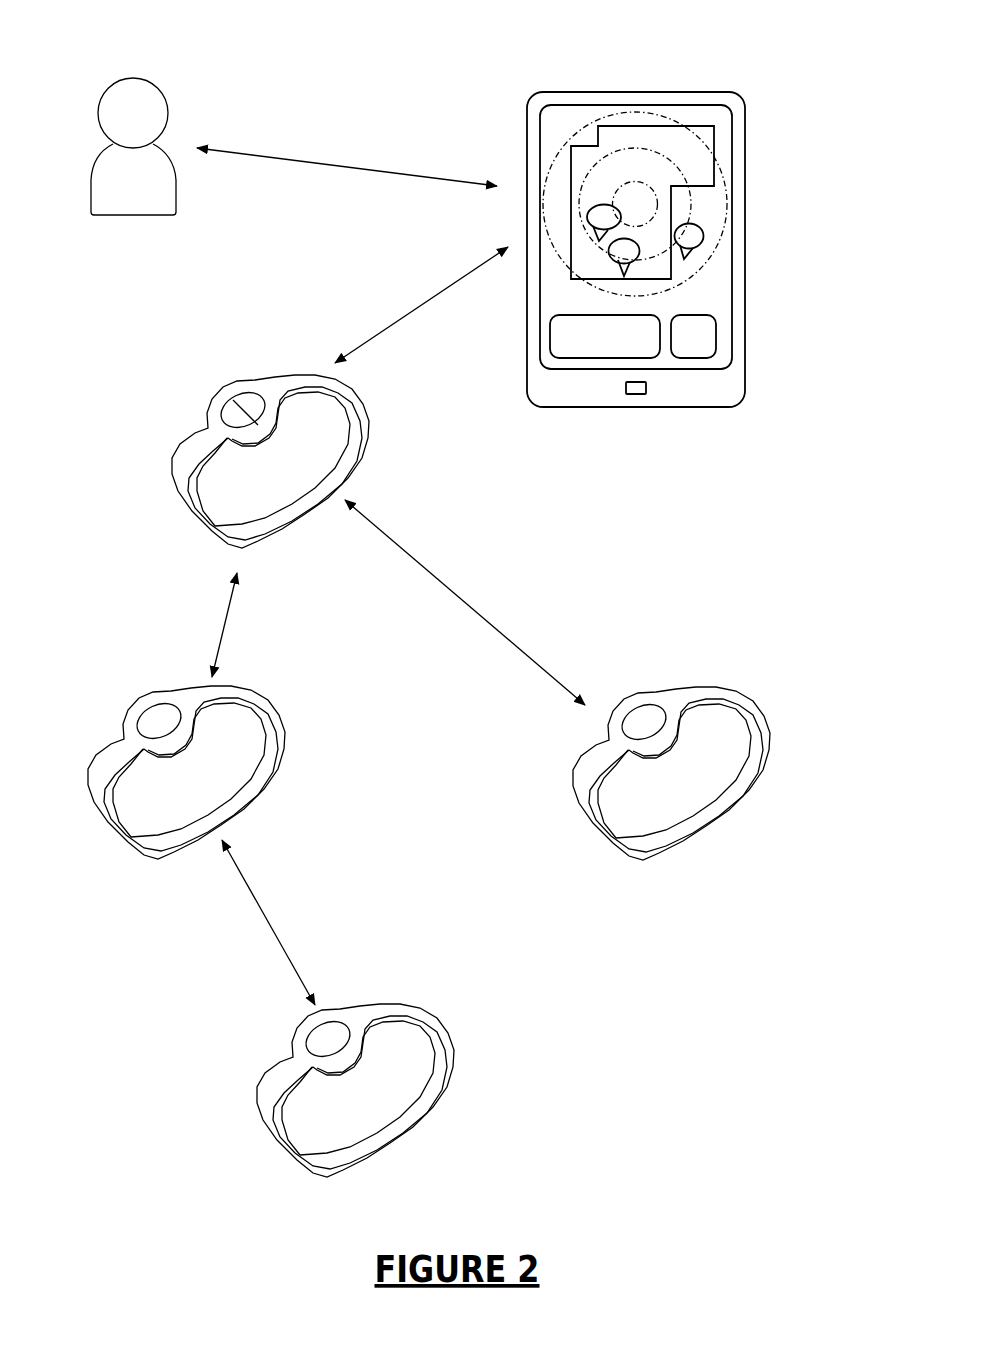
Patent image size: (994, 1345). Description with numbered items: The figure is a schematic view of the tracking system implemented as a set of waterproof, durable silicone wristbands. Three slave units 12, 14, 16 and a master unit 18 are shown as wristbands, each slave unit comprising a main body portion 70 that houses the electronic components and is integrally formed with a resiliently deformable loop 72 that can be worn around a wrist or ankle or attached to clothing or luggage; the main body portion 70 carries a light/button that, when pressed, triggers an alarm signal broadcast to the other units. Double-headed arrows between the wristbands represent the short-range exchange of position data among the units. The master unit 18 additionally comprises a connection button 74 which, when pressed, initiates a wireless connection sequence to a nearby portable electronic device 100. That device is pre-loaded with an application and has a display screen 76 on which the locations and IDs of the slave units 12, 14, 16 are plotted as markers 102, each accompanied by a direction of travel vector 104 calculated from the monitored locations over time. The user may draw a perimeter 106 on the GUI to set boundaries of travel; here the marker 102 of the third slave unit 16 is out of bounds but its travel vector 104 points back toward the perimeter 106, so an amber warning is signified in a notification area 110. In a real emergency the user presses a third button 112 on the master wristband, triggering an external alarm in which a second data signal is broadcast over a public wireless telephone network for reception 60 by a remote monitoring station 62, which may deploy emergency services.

The slave unit 12 is at (412, 730).
The slave unit 14 is at (93, 818).
The slave unit 16 is at (704, 686).
The master unit 18 is at (291, 434).
The reception 60 is at (347, 162).
The remote monitoring station 62 is at (133, 146).
The main body portion 70 is at (343, 1015).
The resiliently deformable loop 72 is at (433, 1078).
The connection button 74 is at (228, 408).
The display screen 76 is at (746, 278).
The portable electronic device 100 is at (683, 92).
The markers 102 is at (699, 233).
The direction of travel vector 104 is at (661, 238).
The perimeter 106 is at (660, 150).
The notification area 110 is at (632, 126).
The third button 112 is at (257, 413).